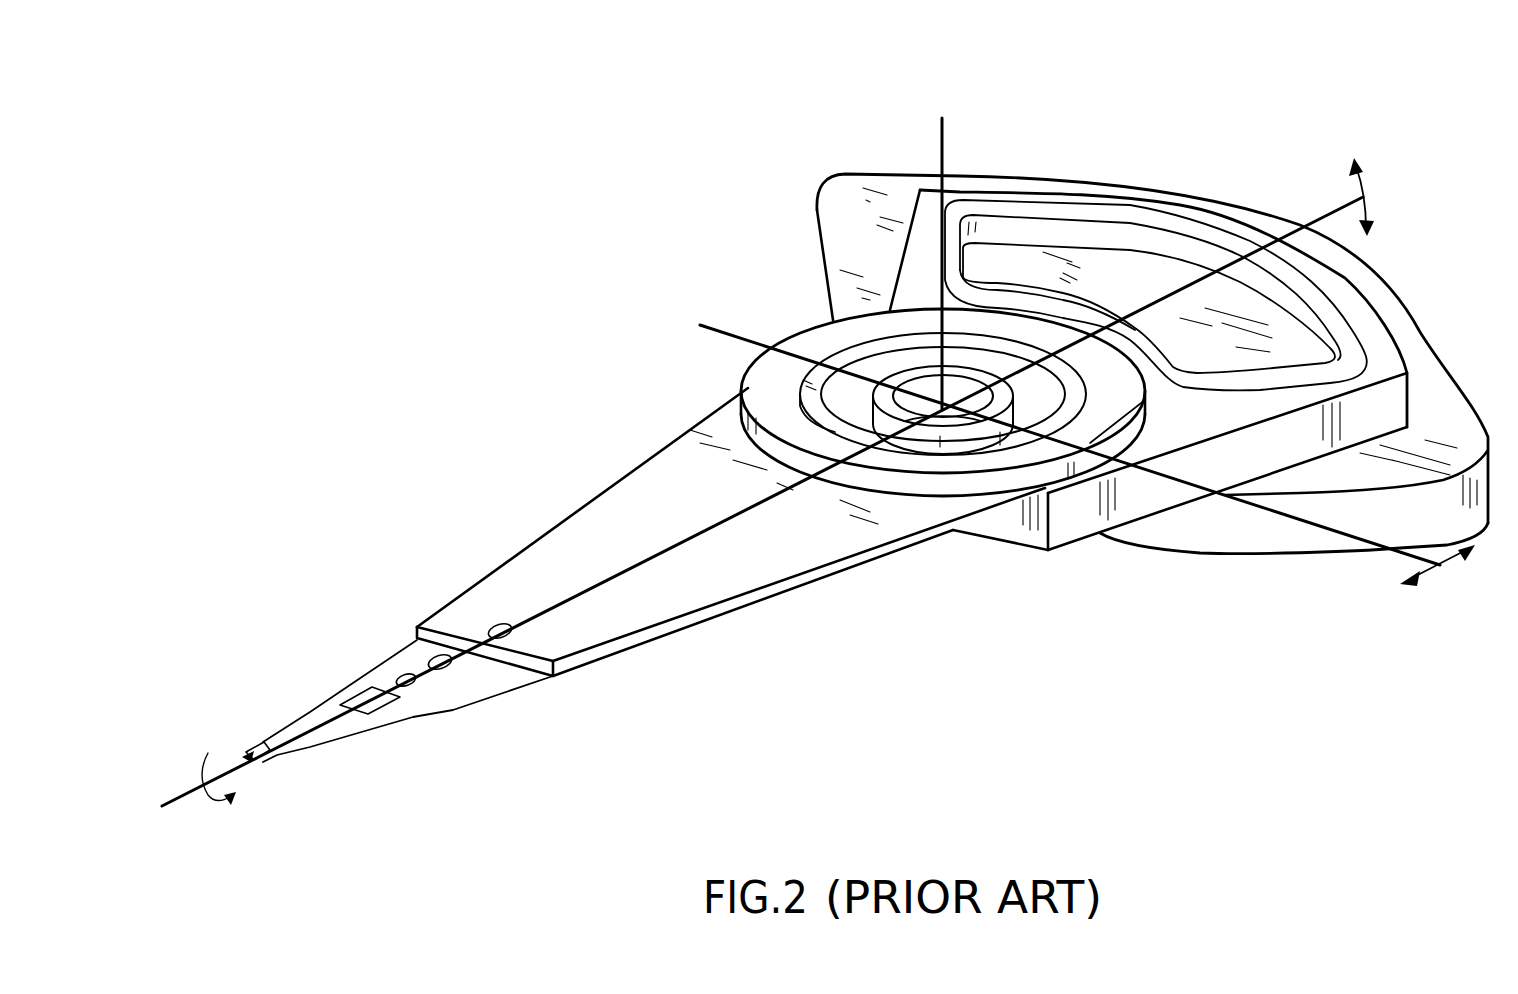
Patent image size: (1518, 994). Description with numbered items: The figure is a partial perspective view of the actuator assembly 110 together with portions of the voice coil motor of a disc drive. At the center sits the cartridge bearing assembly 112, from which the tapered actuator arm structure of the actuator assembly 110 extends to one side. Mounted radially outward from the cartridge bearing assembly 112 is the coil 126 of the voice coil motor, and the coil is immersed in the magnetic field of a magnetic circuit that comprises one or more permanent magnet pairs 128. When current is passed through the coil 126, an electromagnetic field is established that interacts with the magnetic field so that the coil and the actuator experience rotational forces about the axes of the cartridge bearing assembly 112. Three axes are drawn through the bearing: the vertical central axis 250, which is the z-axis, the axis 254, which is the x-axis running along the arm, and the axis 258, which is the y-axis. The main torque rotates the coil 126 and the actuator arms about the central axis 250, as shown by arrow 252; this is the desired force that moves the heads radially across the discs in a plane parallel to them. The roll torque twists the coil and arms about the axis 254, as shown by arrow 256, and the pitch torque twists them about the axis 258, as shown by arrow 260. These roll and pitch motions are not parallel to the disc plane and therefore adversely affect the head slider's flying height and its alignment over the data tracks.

The actuator assembly 110 is at (686, 622).
The cartridge bearing assembly 112 is at (937, 415).
The coil 126 is at (1137, 220).
The permanent magnet pairs 128 is at (830, 215).
The central axis 250 is at (940, 147).
The arrow 252 is at (1425, 579).
The axis 254 is at (192, 790).
The arrow 256 is at (213, 753).
The axis 258 is at (1277, 515).
The arrow 260 is at (1369, 208).